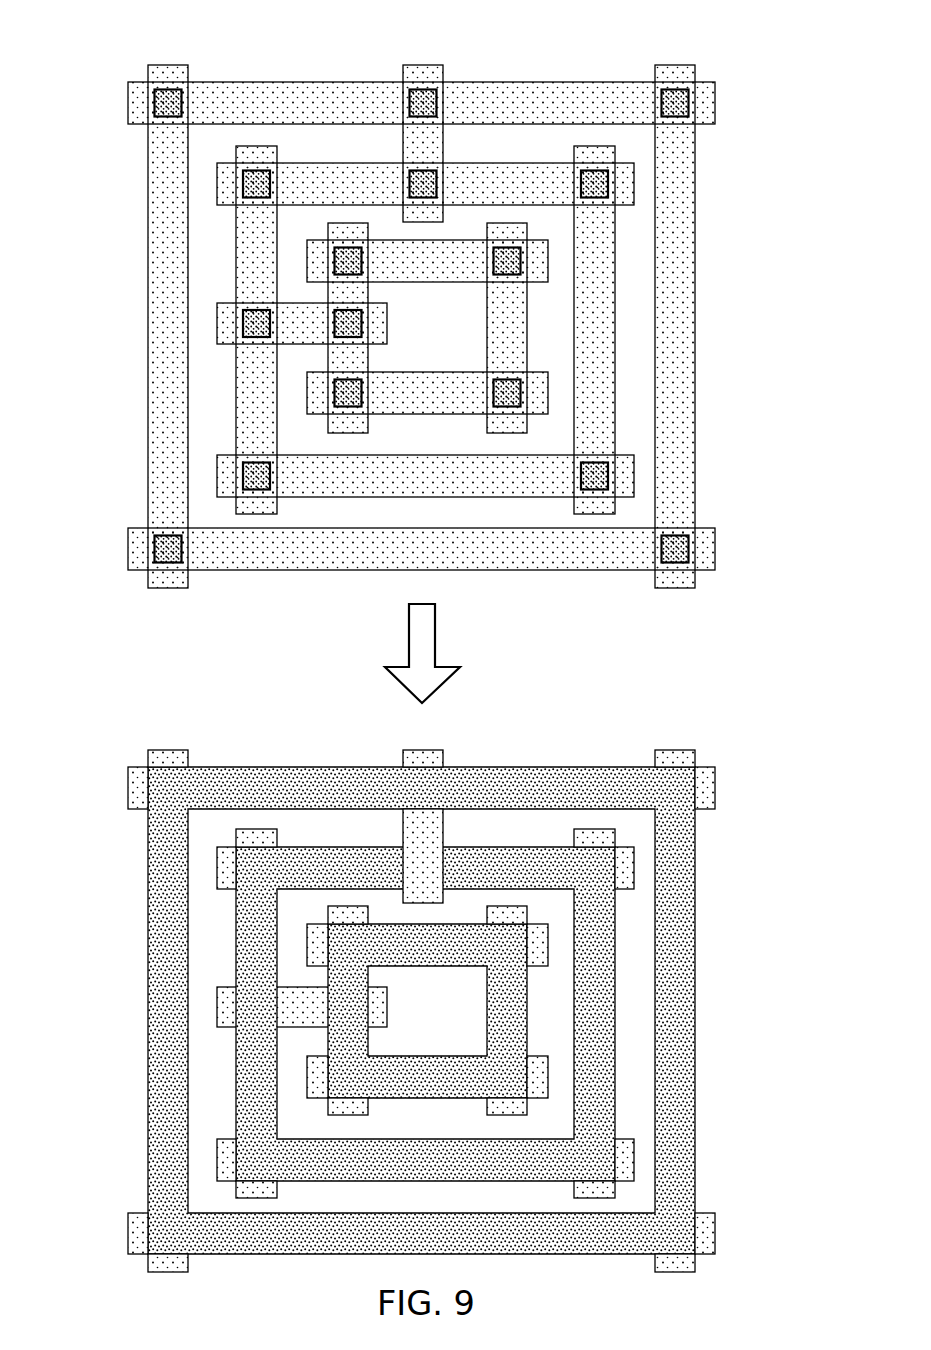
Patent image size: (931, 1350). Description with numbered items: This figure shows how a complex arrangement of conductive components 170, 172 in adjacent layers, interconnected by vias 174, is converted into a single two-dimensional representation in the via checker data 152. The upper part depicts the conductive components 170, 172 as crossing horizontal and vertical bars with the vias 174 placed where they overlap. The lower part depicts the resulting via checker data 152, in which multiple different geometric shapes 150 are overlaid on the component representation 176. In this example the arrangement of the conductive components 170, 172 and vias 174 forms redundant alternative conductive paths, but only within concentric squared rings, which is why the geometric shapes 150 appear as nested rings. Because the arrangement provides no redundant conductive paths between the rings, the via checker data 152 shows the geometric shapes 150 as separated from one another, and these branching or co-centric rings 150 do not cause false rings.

The conductive components 170 is at (460, 240).
The conductive components 172 is at (505, 433).
The vias 174 is at (166, 116).
The geometric shapes 150 is at (463, 927).
The via checker data 152 is at (480, 980).
The component representation 176 is at (716, 1231).